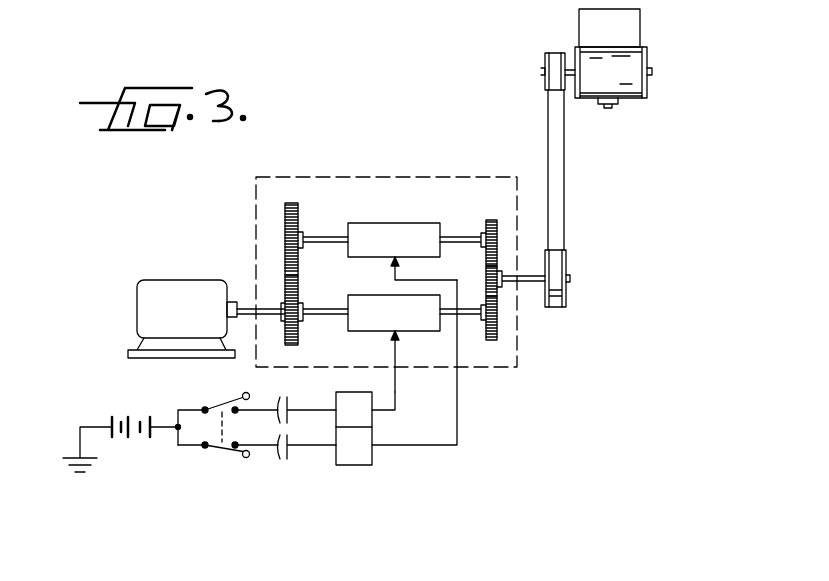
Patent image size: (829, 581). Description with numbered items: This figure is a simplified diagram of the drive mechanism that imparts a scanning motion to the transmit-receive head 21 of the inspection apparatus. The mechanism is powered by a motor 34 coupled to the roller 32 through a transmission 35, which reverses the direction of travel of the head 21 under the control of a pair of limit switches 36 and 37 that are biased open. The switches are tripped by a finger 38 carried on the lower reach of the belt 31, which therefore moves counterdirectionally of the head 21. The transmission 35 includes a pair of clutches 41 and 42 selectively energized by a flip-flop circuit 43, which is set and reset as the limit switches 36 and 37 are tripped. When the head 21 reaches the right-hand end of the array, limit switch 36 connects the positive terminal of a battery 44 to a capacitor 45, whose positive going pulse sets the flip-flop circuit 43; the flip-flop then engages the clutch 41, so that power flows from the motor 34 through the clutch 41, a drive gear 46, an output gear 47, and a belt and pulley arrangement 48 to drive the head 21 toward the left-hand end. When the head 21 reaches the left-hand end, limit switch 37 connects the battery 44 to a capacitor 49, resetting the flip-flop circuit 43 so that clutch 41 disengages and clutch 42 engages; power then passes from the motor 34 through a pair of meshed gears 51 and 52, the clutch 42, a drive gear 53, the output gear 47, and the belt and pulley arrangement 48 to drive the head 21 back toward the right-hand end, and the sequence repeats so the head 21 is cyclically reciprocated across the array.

The head 21 is at (645, 23).
The roller 32 is at (650, 62).
The belt 31 is at (622, 97).
The finger 38 is at (600, 108).
The belt and pulley arrangement 48 is at (564, 212).
The output gear 47 is at (499, 287).
The drive gear 53 is at (490, 220).
The drive gear 46 is at (499, 326).
The meshed gear 52 is at (285, 237).
The meshed gear 51 is at (285, 283).
The clutch 42 is at (370, 223).
The clutch 41 is at (357, 295).
The transmission 35 is at (252, 194).
The motor 34 is at (155, 280).
The battery 44 is at (112, 420).
The limit switch 36 is at (213, 404).
The limit switch 37 is at (222, 452).
The capacitor 45 is at (285, 400).
The capacitor 49 is at (283, 460).
The flip-flop circuit 43 is at (365, 465).